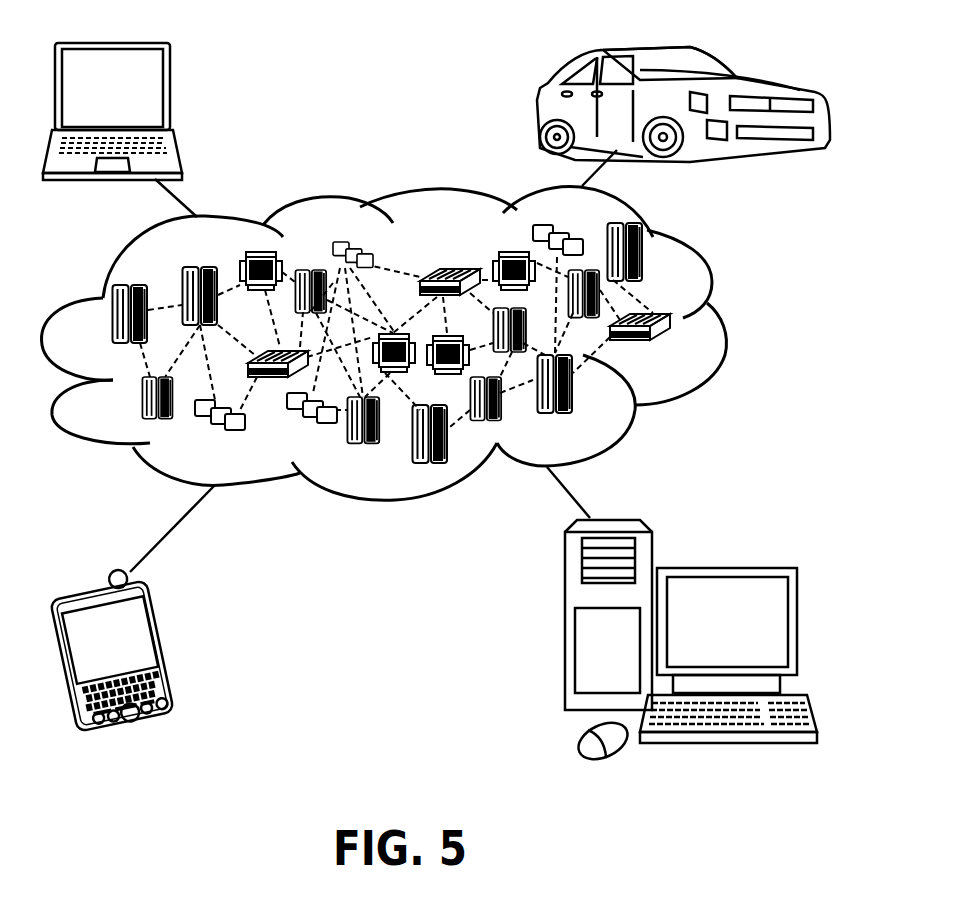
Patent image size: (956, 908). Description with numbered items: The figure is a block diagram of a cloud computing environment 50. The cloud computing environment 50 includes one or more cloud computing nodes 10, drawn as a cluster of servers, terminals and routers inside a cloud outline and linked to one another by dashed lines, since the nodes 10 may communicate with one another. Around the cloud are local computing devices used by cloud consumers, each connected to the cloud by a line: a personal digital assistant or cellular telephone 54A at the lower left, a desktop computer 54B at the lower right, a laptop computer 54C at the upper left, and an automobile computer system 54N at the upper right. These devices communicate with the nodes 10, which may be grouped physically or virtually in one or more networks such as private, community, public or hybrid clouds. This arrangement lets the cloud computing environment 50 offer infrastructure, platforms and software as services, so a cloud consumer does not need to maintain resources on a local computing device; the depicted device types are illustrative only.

The cloud computing nodes 10 is at (682, 353).
The cloud computing environment 50 is at (728, 323).
The personal digital assistant (PDA) or cellular telephone 54A is at (162, 647).
The desktop computer 54B is at (722, 568).
The laptop computer 54C is at (171, 93).
The automobile computer system 54N is at (541, 105).